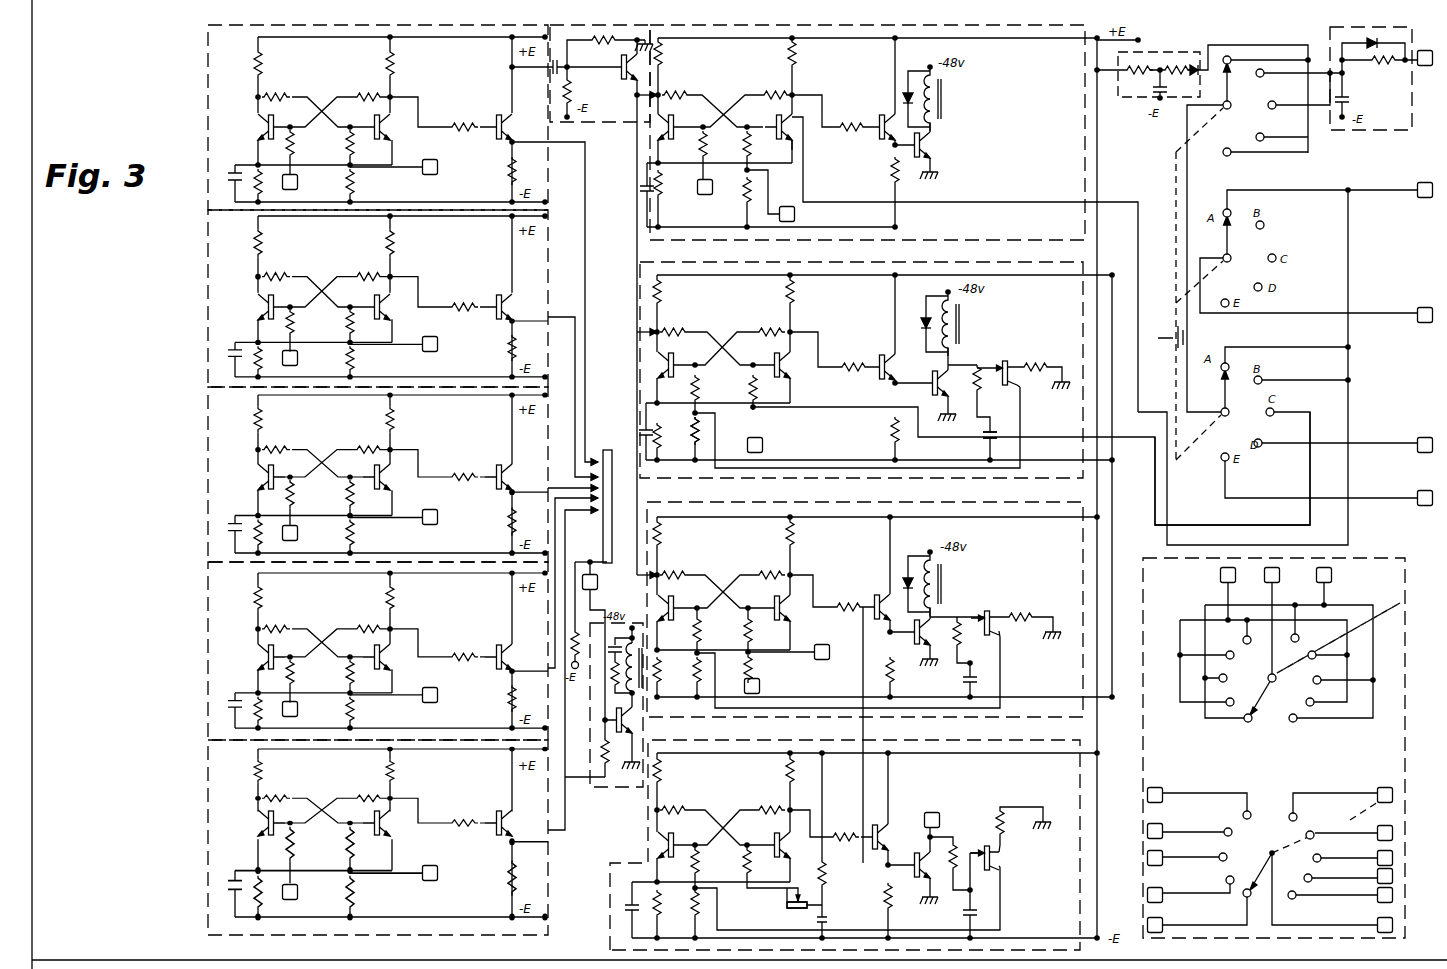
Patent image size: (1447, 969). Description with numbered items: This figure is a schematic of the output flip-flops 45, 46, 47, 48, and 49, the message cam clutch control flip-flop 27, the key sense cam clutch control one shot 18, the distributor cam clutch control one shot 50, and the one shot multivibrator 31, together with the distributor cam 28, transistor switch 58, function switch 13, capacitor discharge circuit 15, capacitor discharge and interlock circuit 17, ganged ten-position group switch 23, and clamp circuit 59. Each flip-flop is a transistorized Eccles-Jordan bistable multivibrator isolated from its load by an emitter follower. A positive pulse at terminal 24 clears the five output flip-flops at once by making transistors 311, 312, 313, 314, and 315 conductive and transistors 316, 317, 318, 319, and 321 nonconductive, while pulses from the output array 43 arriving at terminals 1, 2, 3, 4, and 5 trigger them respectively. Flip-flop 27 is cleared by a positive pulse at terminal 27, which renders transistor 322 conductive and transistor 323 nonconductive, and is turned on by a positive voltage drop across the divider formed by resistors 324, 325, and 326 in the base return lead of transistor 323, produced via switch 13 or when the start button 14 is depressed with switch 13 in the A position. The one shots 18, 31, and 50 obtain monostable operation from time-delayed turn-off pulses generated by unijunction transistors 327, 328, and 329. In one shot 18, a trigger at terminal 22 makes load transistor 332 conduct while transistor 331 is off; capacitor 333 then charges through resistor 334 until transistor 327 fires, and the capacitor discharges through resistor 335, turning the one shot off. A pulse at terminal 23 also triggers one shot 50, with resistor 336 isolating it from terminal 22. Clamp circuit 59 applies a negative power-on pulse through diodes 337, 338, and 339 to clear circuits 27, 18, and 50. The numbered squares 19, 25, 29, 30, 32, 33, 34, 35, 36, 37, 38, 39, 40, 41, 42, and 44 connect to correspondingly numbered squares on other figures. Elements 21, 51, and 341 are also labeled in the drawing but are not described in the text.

The terminal 1 is at (433, 160).
The terminal 2 is at (438, 344).
The terminal 3 is at (438, 518).
The terminal 4 is at (438, 695).
The terminal 5 is at (438, 874).
The function switch 13 is at (1176, 152).
The start button 14 is at (1172, 341).
The capacitor discharge circuit 15 is at (1160, 52).
The capacitor discharge and interlock circuit 17 is at (1400, 130).
The key sense cam clutch control one shot 18 is at (1035, 254).
The numbered square 19 is at (1417, 198).
The potentiometer 21 is at (799, 890).
The terminal 22 is at (775, 684).
The ganged ten-position group switch 23 is at (832, 652).
The terminal 24 is at (309, 892).
The numbered square 25 is at (1416, 312).
The message cam clutch control flip-flop 27 is at (1063, 27).
The distributor cam 28 is at (607, 450).
The numbered square 29 is at (1320, 583).
The numbered square 30 is at (1220, 576).
The one shot multivibrator 31 is at (977, 742).
The numbered square 32 is at (1160, 893).
The numbered square 33 is at (1160, 860).
The numbered square 34 is at (1160, 830).
The numbered square 35 is at (1158, 788).
The numbered square 36 is at (1378, 792).
The numbered square 37 is at (1378, 828).
The numbered square 38 is at (1378, 855).
The numbered square 39 is at (1378, 875).
The numbered square 40 is at (1378, 898).
The numbered square 41 is at (1279, 576).
The numbered square 42 is at (1418, 68).
The output array 43 is at (1416, 496).
The numbered square 44 is at (1415, 442).
The output flip-flop 45 is at (208, 138).
The output flip-flop 46 is at (208, 327).
The output flip-flop 47 is at (208, 476).
The output flip-flop 48 is at (208, 603).
The output flip-flop 49 is at (208, 760).
The distributor cam clutch control one shot 50 is at (1020, 488).
The reset circuit 51 is at (598, 549).
The transistor switch 58 is at (626, 787).
The clamp circuit 59 is at (617, 125).
The transistor 311 is at (284, 118).
The transistor 312 is at (284, 298).
The transistor 313 is at (284, 469).
The transistor 314 is at (284, 649).
The transistor 315 is at (284, 816).
The transistor 316 is at (384, 122).
The transistor 317 is at (392, 307).
The transistor 318 is at (392, 477).
The transistor 319 is at (392, 657).
The transistor 321 is at (397, 829).
The transistor 322 is at (684, 123).
The transistor 323 is at (777, 117).
The resistor 324 is at (774, 149).
The resistor 325 is at (752, 186).
The resistor 326 is at (745, 213).
The unijunction transistor 327 is at (1027, 353).
The unijunction transistor 328 is at (1003, 606).
The unijunction transistor 329 is at (1000, 810).
The transistor 331 is at (724, 358).
The load transistor 332 is at (922, 379).
The capacitor 333 is at (1000, 437).
The resistor 334 is at (984, 392).
The resistor 335 is at (703, 422).
The resistor 336 is at (752, 663).
The diode 337 is at (657, 93).
The diode 338 is at (652, 330).
The diode 339 is at (645, 578).
The transistor 341 is at (912, 856).